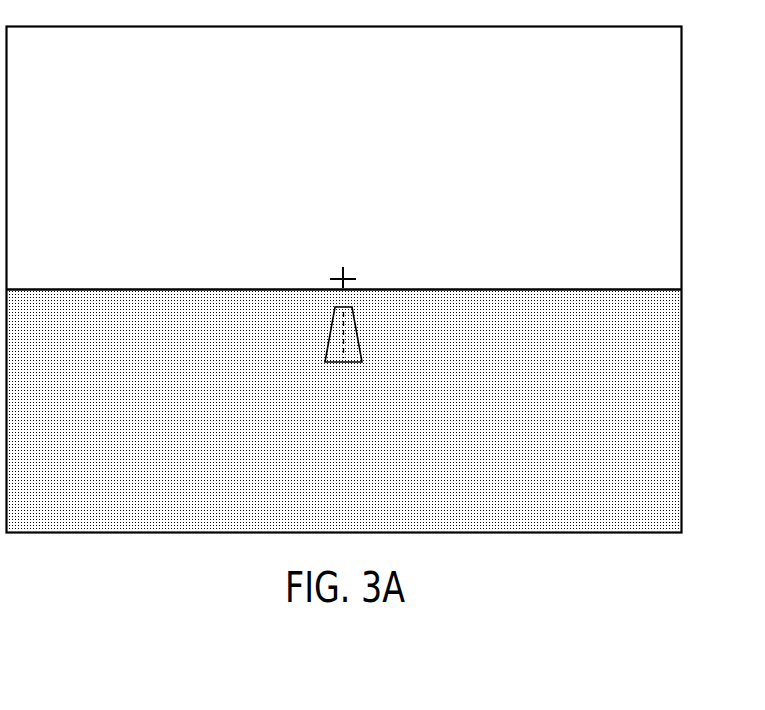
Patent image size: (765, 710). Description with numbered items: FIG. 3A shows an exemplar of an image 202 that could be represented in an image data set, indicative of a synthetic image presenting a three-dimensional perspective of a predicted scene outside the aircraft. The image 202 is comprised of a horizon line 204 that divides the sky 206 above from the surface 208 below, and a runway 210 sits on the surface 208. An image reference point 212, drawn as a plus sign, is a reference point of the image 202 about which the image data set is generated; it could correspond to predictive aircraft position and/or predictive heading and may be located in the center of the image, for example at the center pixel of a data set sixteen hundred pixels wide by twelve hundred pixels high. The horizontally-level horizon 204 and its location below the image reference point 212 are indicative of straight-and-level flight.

The image 202 is at (344, 267).
The horizon line 204 is at (118, 274).
The sky 206 is at (67, 70).
The surface 208 is at (68, 513).
The runway 210 is at (344, 365).
The image reference point 212 is at (435, 264).